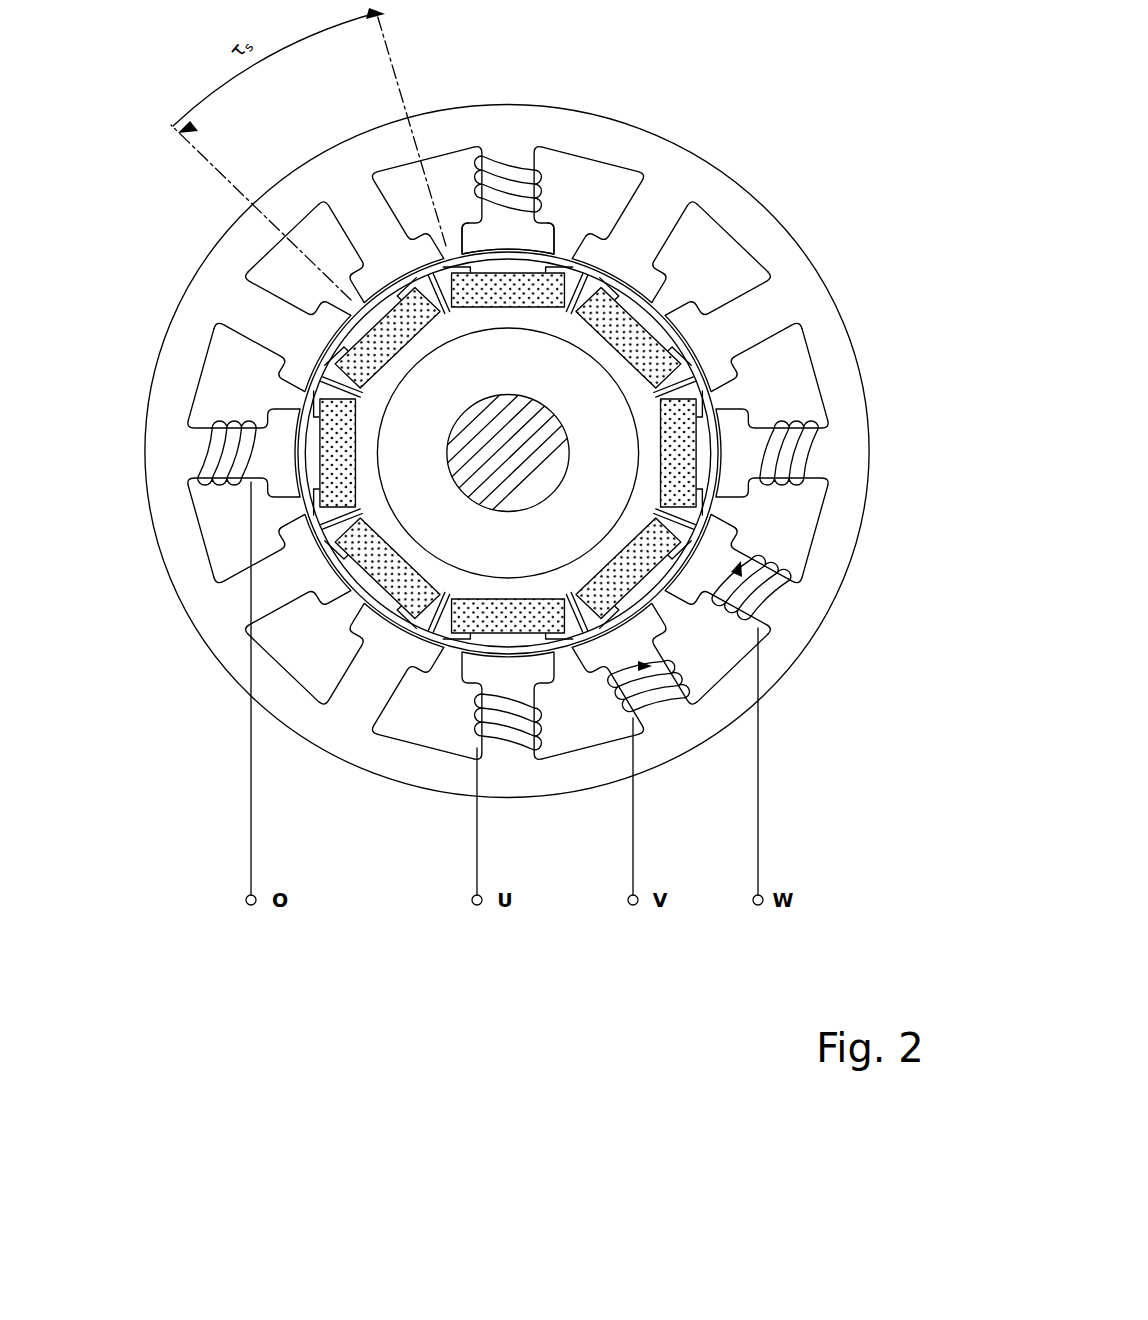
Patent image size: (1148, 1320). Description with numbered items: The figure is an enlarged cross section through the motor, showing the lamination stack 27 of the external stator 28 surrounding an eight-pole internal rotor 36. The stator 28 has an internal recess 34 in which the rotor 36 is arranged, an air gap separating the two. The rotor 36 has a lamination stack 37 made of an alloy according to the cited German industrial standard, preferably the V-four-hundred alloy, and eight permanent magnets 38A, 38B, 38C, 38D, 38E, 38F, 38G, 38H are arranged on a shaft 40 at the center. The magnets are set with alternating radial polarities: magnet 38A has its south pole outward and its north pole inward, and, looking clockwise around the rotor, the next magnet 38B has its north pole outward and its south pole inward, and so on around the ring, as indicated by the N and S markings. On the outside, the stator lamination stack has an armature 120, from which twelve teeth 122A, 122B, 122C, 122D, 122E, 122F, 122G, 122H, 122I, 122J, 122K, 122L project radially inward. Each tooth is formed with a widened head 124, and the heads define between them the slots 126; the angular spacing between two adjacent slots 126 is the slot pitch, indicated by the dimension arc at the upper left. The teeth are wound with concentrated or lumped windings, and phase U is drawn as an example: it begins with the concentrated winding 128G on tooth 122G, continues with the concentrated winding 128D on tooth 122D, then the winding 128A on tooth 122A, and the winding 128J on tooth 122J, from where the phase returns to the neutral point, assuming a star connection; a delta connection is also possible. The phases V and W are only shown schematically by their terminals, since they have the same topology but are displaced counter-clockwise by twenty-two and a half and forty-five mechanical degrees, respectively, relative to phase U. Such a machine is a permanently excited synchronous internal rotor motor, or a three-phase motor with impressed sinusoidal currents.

The lamination stack 27 is at (683, 152).
The external stator 28 is at (634, 92).
The internal recess 34 is at (586, 250).
The internal rotor 36 is at (344, 609).
The lamination stack 37 is at (510, 373).
The permanent magnet 38A is at (480, 312).
The permanent magnet 38B is at (612, 340).
The permanent magnet 38C is at (652, 468).
The permanent magnet 38D is at (609, 556).
The permanent magnet 38E is at (522, 596).
The permanent magnet 38F is at (406, 552).
The permanent magnet 38G is at (366, 475).
The permanent magnet 38H is at (402, 362).
The shaft 40 is at (456, 440).
The armature 120 is at (808, 652).
The tooth 122A is at (483, 141).
The tooth 122B is at (654, 196).
The tooth 122C is at (758, 309).
The tooth 122D is at (808, 464).
The tooth 122E is at (769, 616).
The tooth 122F is at (649, 731).
The tooth 122G is at (483, 784).
The tooth 122H is at (314, 734).
The tooth 122I is at (200, 616).
The tooth 122J is at (152, 464).
The tooth 122K is at (198, 309).
The tooth 122L is at (310, 191).
The widened head 124 is at (492, 248).
The slot 126 is at (351, 299).
The winding 128A is at (473, 168).
The winding 128D is at (812, 427).
The winding 128G is at (545, 745).
The winding 128J is at (214, 500).